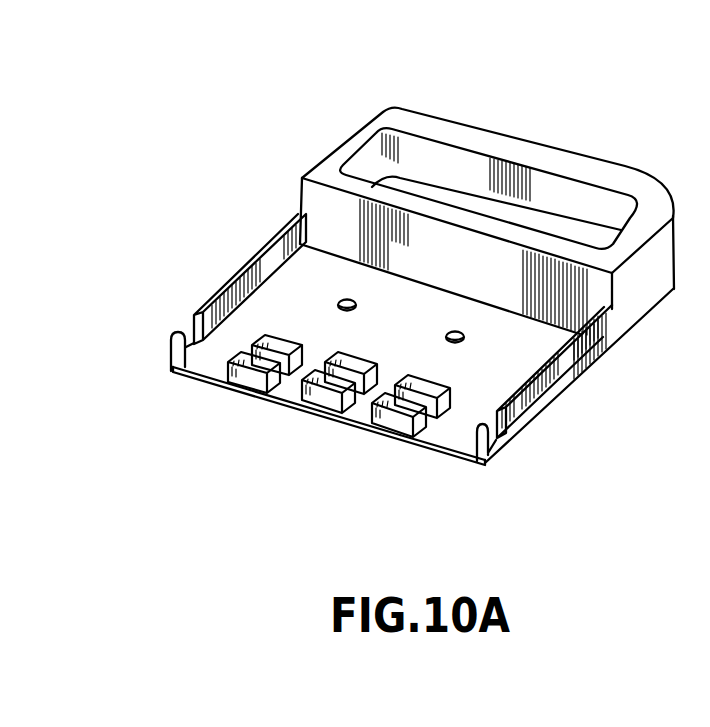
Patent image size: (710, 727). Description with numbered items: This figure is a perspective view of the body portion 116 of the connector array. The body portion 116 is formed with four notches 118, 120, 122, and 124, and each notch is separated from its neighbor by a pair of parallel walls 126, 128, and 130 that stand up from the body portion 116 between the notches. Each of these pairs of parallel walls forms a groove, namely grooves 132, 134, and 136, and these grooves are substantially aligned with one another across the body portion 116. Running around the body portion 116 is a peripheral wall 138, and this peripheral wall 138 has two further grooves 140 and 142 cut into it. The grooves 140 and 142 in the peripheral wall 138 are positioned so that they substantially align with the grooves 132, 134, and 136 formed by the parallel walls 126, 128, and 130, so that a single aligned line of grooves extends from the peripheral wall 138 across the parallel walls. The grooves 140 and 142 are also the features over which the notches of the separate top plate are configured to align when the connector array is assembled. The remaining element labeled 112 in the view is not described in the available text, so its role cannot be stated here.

The housing 112 is at (560, 167).
The body portion 116 is at (205, 215).
The notch 118 is at (220, 350).
The notch 120 is at (287, 386).
The notch 122 is at (372, 396).
The notch 124 is at (458, 425).
The parallel wall 126 is at (280, 335).
The parallel wall 128 is at (352, 357).
The parallel wall 130 is at (433, 385).
The groove 132 is at (245, 346).
The groove 134 is at (317, 368).
The groove 136 is at (385, 394).
The peripheral wall 138 is at (246, 266).
The groove 140 is at (186, 329).
The groove 142 is at (505, 430).